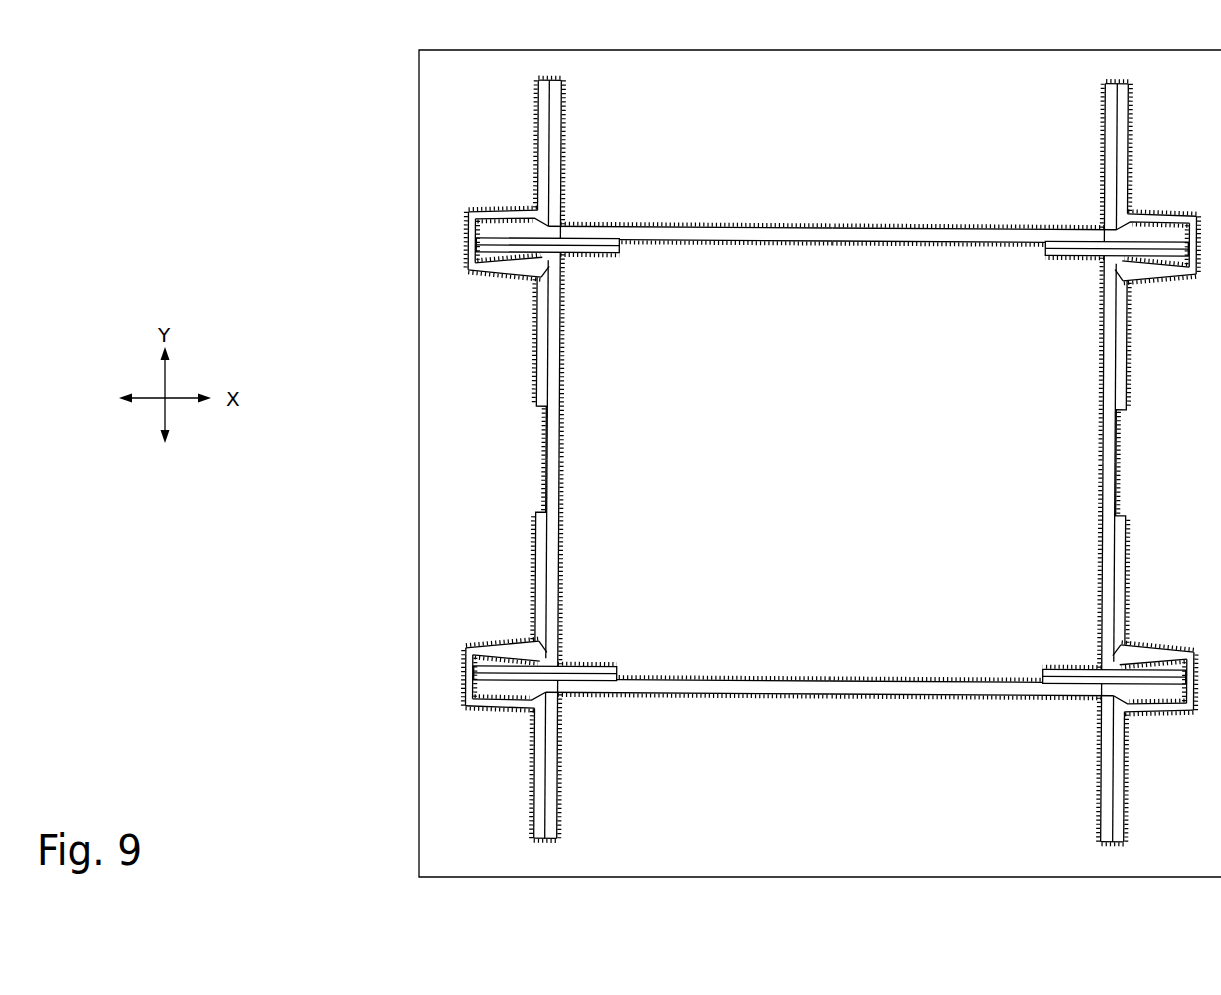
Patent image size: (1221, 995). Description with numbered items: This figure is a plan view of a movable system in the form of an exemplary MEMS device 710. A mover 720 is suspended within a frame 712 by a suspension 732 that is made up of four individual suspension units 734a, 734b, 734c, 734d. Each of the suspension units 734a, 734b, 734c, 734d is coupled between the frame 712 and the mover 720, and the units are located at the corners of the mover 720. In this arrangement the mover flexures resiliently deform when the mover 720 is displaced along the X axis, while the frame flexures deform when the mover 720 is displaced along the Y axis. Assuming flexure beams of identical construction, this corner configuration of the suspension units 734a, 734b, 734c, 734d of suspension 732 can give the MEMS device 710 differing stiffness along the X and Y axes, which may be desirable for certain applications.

The MEMS device 710 is at (362, 181).
The frame 712 is at (418, 553).
The mover 720 is at (556, 488).
The suspension 732 is at (485, 121).
The suspension unit 734a is at (515, 295).
The suspension unit 734b is at (1172, 196).
The suspension unit 734c is at (1150, 628).
The suspension unit 734d is at (516, 726).